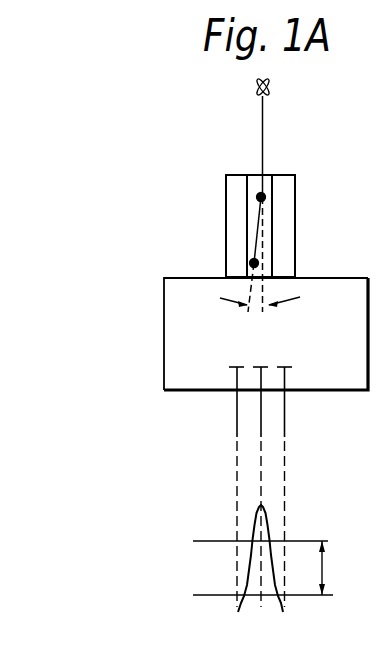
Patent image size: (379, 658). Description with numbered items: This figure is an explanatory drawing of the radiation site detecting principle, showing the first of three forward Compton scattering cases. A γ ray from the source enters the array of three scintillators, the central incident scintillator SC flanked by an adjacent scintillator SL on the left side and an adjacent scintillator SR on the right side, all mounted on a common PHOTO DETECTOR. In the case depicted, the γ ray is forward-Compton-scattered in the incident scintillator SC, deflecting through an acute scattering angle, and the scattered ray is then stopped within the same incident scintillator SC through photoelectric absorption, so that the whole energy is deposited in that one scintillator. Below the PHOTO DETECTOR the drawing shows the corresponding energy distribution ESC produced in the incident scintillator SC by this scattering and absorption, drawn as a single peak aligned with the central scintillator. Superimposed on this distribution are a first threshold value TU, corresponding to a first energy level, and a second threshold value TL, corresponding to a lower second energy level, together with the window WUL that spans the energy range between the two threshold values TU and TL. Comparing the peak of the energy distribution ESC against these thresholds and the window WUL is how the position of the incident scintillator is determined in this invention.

The light source is at (263, 86).
The adjacent scintillator on the left side SL is at (225, 180).
The incident scintillator SC is at (269, 182).
The adjacent scintillator on the right side SR is at (297, 197).
The photo detector PHOTO DETECTOR is at (176, 373).
The energy distribution in the incident scintillator ESC is at (268, 517).
The first threshold value TU is at (236, 541).
The second threshold value TL is at (239, 596).
The window WUL is at (342, 568).